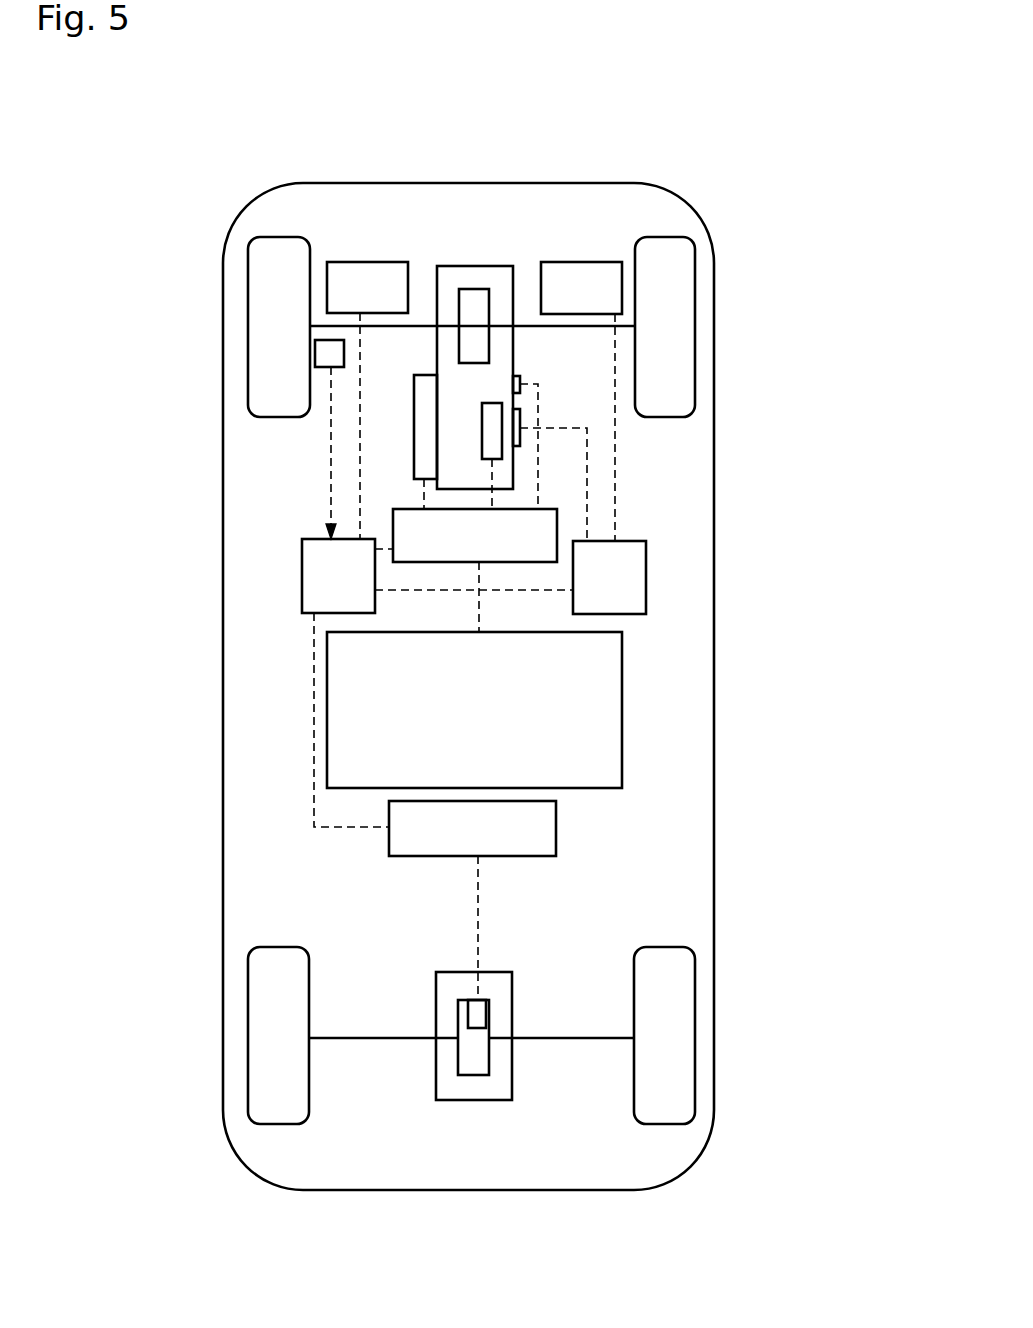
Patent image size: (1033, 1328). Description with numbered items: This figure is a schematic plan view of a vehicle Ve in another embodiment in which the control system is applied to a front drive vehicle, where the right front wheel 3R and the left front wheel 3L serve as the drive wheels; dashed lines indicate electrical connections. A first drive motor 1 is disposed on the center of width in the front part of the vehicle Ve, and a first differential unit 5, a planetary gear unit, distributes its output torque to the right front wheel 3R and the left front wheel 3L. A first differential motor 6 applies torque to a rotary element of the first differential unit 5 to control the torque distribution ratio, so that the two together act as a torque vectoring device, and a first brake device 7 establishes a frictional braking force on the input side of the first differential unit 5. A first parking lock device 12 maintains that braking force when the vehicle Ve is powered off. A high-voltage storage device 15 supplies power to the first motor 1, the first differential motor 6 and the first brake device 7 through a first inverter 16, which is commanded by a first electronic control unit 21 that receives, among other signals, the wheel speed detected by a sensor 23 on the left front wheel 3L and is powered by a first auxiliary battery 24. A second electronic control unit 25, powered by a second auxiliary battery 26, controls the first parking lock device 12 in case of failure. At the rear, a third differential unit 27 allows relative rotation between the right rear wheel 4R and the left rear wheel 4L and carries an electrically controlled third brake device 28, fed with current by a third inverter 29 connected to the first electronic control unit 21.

The vehicle Ve is at (764, 171).
The first drive motor 1 is at (422, 409).
The left front wheel 3L is at (277, 247).
The right front wheel 3R is at (662, 248).
The left rear wheel 4L is at (272, 1113).
The right rear wheel 4R is at (664, 1113).
The first differential unit 5 is at (473, 298).
The first differential motor 6 is at (515, 376).
The first brake device 7 is at (494, 413).
The first parking lock device 12 is at (521, 417).
The storage device 15 is at (603, 683).
The first inverter 16 is at (549, 521).
The first electronic control unit 21 is at (325, 580).
The sensor 23 is at (325, 362).
The first auxiliary battery 24 is at (367, 272).
The second electronic control unit 25 is at (632, 579).
The second auxiliary battery 26 is at (582, 273).
The third differential unit 27 is at (492, 978).
The third brake device 28 is at (480, 1014).
The third inverter 29 is at (543, 830).